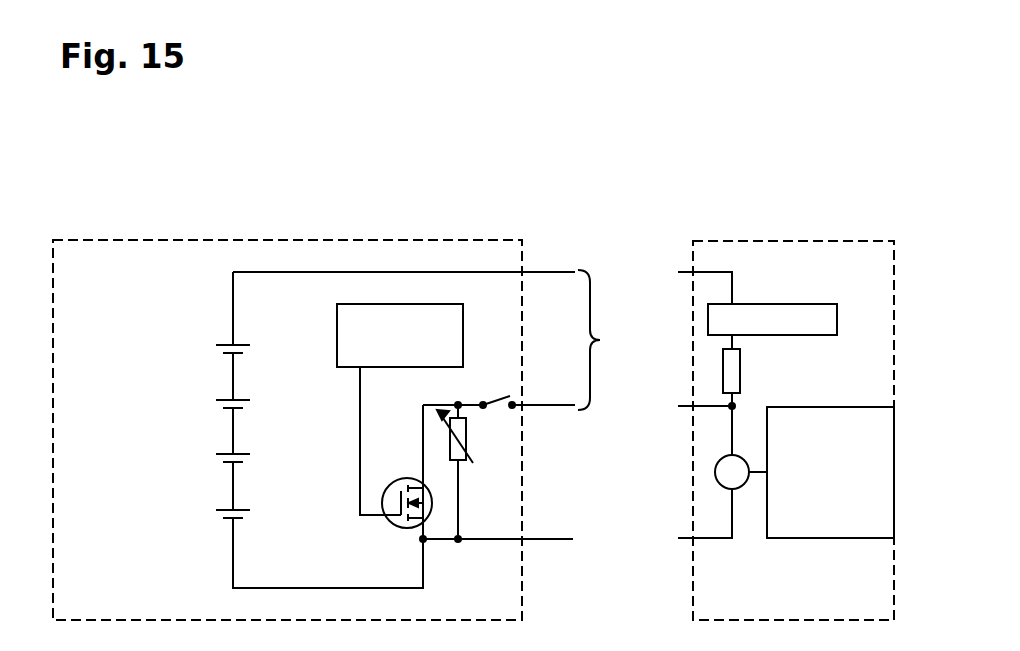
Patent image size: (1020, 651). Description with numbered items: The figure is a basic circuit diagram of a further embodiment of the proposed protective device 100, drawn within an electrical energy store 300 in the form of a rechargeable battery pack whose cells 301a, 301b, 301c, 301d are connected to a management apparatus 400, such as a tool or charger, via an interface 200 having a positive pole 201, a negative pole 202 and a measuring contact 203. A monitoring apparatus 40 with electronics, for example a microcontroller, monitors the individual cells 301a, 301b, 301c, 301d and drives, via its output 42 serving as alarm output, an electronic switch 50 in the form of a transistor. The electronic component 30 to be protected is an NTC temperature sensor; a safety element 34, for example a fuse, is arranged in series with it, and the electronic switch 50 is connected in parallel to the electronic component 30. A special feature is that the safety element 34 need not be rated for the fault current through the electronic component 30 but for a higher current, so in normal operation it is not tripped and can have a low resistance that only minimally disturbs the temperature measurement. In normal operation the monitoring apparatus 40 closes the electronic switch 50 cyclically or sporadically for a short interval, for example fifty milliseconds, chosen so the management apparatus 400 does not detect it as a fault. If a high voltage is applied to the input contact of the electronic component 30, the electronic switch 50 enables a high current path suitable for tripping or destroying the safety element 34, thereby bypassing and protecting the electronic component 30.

The protective device 100 is at (148, 188).
The electrical energy store 300 is at (278, 240).
The cell 301a is at (205, 345).
The cell 301b is at (205, 400).
The cell 301c is at (205, 454).
The cell 301d is at (205, 510).
The monitoring apparatus 40 is at (337, 322).
The output 42 is at (360, 370).
The electronic switch 50 is at (392, 480).
The electronic component 30 is at (468, 458).
The safety element 34 is at (500, 396).
The interface 200 is at (617, 340).
The positive pole 201 is at (562, 270).
The negative pole 202 is at (562, 541).
The measuring contact 203 is at (560, 408).
The management apparatus 400 is at (793, 241).